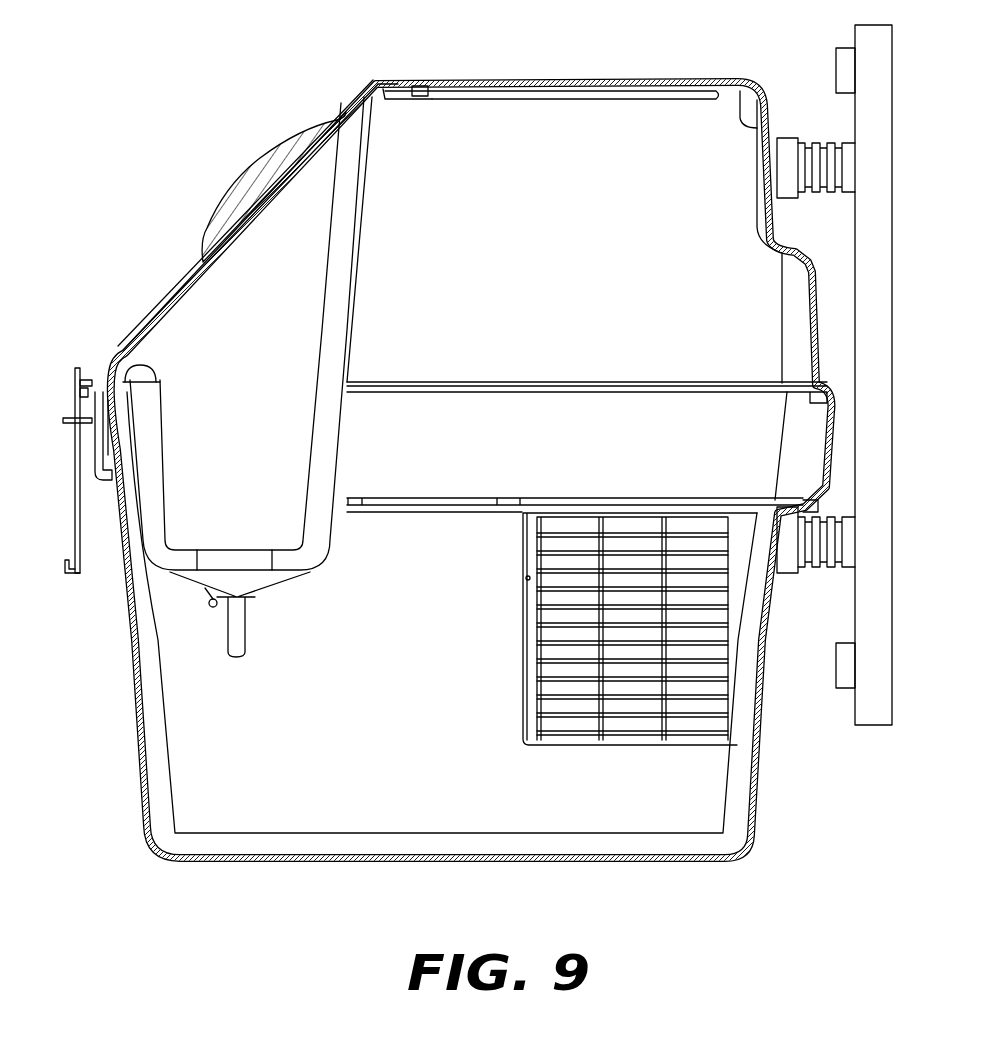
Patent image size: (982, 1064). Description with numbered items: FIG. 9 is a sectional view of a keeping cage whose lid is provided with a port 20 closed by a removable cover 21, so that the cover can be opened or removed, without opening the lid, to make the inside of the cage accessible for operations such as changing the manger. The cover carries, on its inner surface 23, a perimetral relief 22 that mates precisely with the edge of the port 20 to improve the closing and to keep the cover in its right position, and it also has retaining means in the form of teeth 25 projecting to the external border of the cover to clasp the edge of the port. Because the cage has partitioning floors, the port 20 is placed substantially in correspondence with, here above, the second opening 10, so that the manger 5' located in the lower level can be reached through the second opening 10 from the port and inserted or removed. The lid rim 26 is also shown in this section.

The second opening 10 is at (347, 493).
The port 20 is at (373, 88).
The removable cover 21 is at (167, 293).
The perimetral relief 22 is at (127, 352).
The inner surface 23 is at (240, 248).
The teeth 25 is at (123, 352).
The rim flange 26 is at (435, 78).
The manger 5' is at (640, 667).